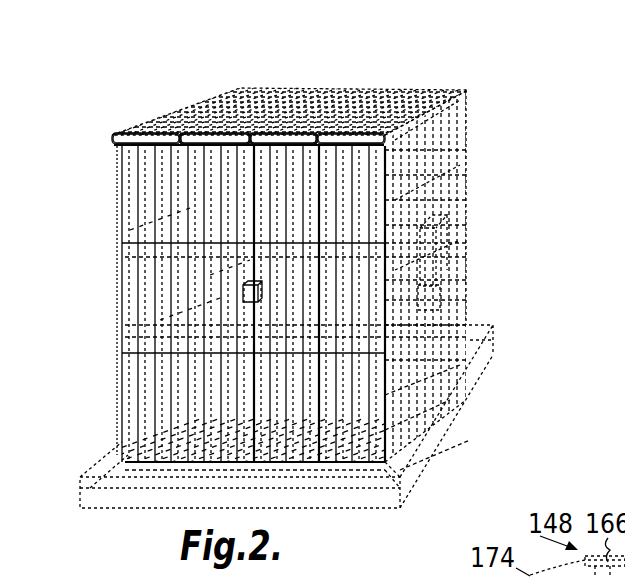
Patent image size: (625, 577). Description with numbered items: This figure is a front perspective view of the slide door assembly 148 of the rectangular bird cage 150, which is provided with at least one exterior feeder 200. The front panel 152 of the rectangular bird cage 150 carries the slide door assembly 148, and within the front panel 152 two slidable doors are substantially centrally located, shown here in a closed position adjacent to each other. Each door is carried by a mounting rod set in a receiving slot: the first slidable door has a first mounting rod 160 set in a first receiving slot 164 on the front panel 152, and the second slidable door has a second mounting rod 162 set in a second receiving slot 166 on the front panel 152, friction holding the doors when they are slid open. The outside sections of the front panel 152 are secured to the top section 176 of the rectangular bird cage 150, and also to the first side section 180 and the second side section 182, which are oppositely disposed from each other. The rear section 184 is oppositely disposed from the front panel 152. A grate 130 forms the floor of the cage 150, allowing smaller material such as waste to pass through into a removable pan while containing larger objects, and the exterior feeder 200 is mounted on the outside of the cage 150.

The grate 130 is at (372, 372).
The slide door assembly 148 is at (100, 125).
The rectangular bird cage 150 is at (480, 83).
The front panel 152 is at (105, 442).
The first mounting rod 160 is at (222, 135).
The second mounting rod 162 is at (290, 135).
The first receiving slot 164 is at (152, 135).
The second receiving slot 166 is at (355, 135).
The top section 176 is at (313, 58).
The first side section 180 is at (146, 262).
The second side section 182 is at (455, 298).
The rear section 184 is at (443, 147).
The exterior feeder 200 is at (450, 246).